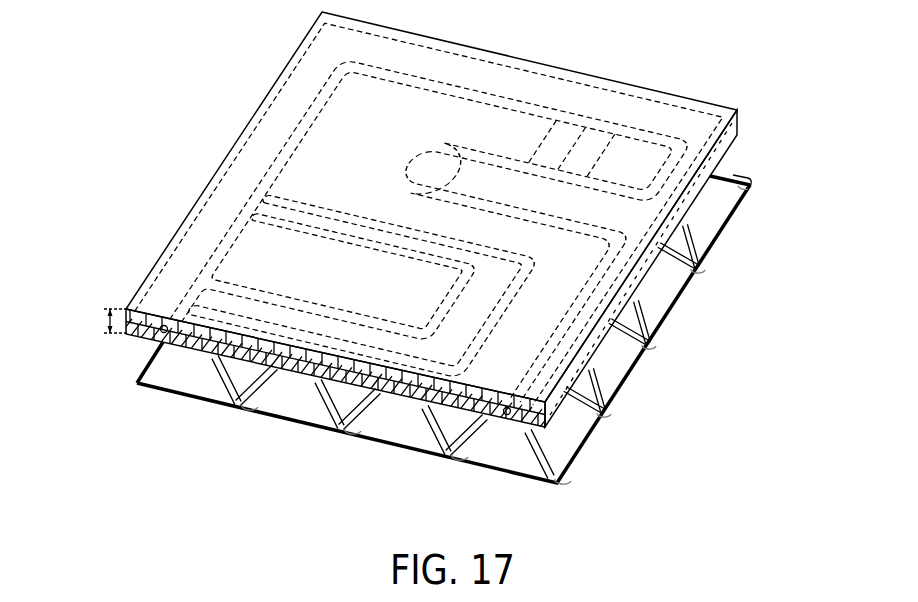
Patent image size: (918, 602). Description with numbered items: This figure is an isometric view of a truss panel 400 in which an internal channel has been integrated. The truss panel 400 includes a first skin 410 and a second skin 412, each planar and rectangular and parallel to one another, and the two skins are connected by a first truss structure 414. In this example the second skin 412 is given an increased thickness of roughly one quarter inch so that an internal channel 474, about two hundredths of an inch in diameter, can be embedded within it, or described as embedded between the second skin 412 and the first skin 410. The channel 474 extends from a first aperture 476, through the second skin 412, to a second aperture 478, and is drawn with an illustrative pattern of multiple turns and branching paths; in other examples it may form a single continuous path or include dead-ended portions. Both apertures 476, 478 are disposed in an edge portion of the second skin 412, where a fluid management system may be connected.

The truss panel 400 is at (148, 72).
The first skin 410 is at (728, 208).
The second skin 412 is at (742, 128).
The first truss structure 414 is at (645, 310).
The internal channel 474 is at (303, 120).
The first aperture 476 is at (161, 333).
The second aperture 478 is at (506, 416).